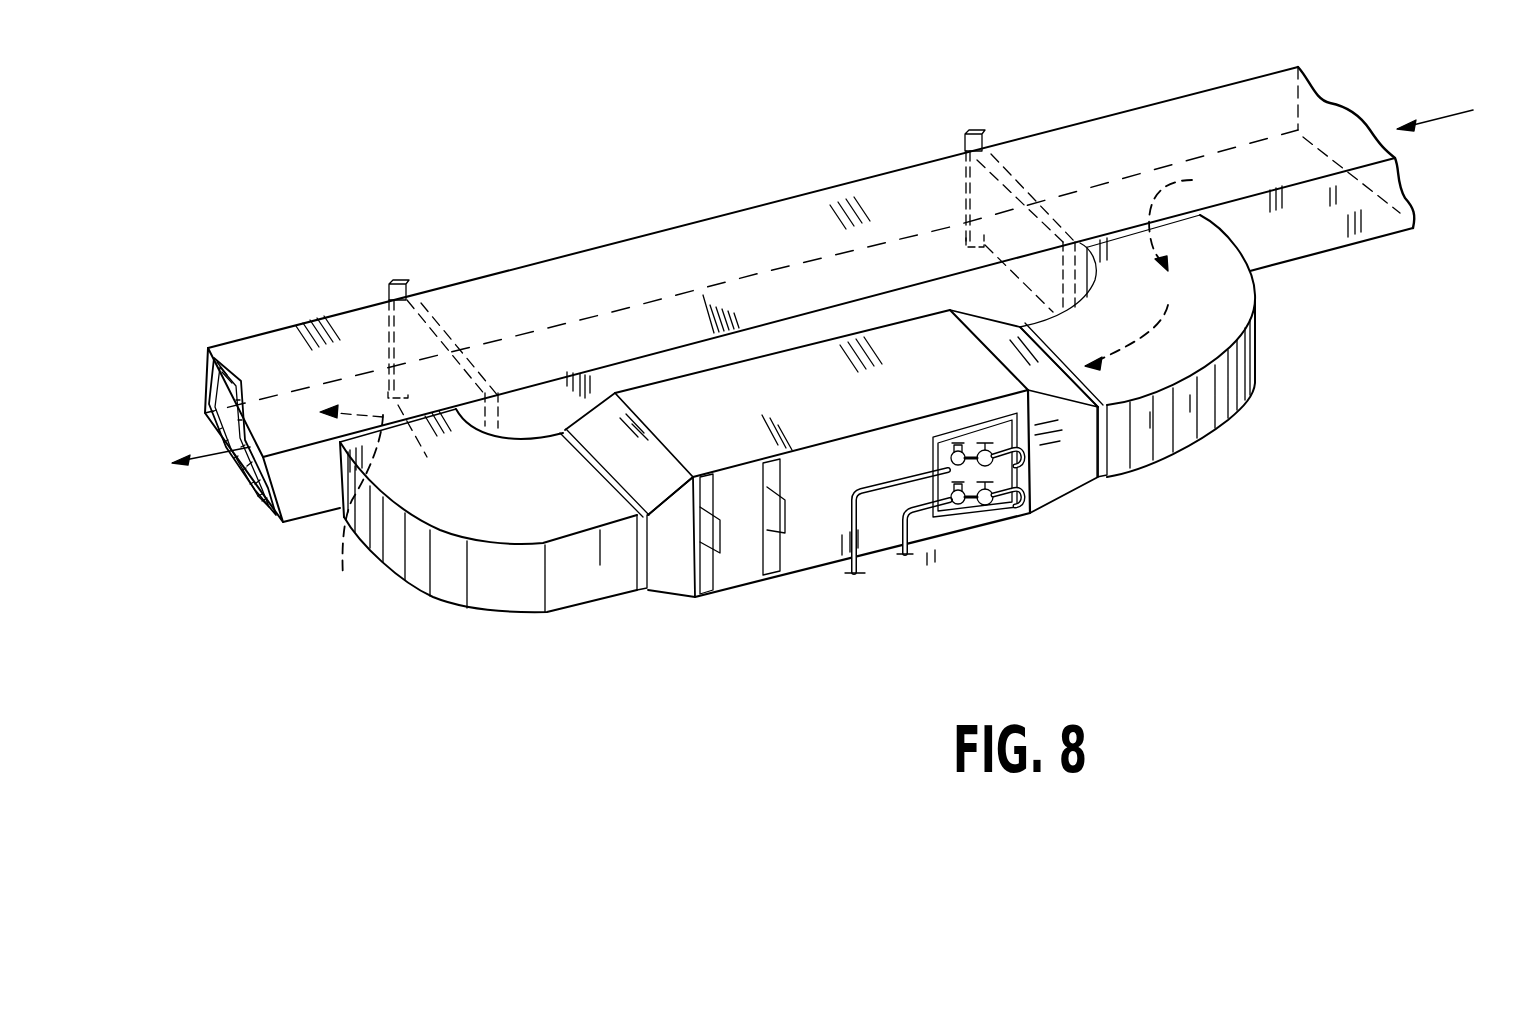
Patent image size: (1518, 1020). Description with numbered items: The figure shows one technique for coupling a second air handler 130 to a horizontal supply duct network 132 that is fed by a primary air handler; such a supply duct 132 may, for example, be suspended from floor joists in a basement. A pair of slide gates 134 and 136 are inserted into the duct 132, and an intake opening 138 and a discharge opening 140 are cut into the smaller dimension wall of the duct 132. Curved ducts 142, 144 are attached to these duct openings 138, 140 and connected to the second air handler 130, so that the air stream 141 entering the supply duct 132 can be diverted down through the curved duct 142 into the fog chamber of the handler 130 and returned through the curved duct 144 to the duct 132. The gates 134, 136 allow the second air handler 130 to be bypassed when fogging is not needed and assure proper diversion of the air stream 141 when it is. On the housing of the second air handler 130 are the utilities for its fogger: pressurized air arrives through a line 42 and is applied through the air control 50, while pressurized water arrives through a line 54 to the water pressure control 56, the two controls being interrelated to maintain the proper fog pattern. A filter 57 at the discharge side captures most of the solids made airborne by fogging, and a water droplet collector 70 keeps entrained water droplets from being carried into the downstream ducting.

The horizontal supply duct network 132 is at (744, 209).
The slide gate 134 is at (968, 133).
The slide gate 136 is at (393, 283).
The air stream 141 is at (1445, 117).
The intake opening 138 is at (1182, 226).
The curved duct 142 is at (1243, 403).
The curved duct 144 is at (495, 590).
The discharge opening 140 is at (351, 515).
The second air handler 130 is at (780, 592).
The filter 57 is at (708, 597).
The water droplet collector 70 is at (793, 572).
The line 54 is at (860, 480).
The line 42 is at (893, 527).
The water pressure control 56 is at (930, 443).
The air control 50 is at (975, 520).